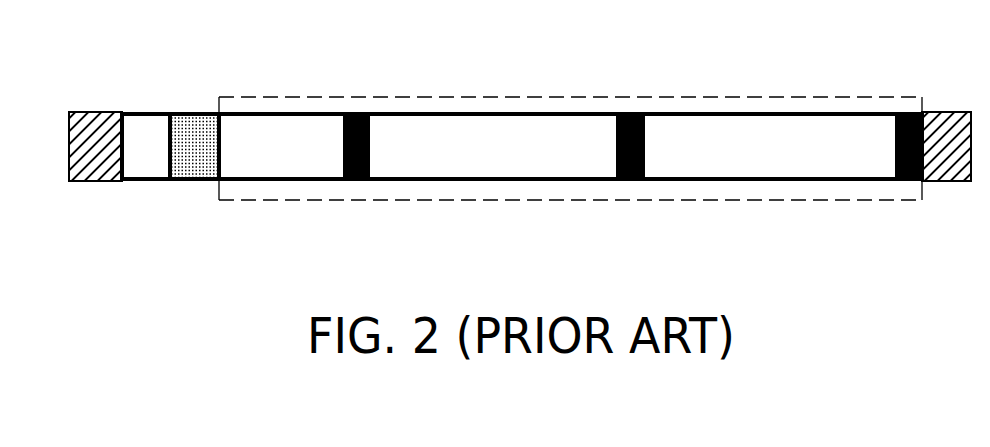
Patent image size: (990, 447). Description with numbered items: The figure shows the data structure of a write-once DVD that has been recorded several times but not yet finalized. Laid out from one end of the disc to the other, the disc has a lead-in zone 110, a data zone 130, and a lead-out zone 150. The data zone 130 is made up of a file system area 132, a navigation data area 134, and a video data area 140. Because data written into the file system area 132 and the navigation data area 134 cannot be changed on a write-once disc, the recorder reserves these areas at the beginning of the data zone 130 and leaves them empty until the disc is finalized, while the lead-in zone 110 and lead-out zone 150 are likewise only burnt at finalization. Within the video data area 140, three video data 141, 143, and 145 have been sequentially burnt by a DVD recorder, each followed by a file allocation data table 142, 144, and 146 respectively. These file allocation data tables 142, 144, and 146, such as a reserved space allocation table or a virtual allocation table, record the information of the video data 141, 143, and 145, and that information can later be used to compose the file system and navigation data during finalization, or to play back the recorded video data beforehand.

The lead-in zone 110 is at (97, 132).
The data zone 130 is at (682, 182).
The file system area 132 is at (147, 133).
The navigation data area 134 is at (200, 132).
The video data area 140 is at (373, 200).
The video data 141 is at (278, 128).
The file allocation data table 142 is at (360, 108).
The video data 143 is at (492, 130).
The file allocation data table 144 is at (630, 117).
The video data 145 is at (777, 130).
The file allocation data table 146 is at (907, 115).
The lead-out zone 150 is at (943, 140).